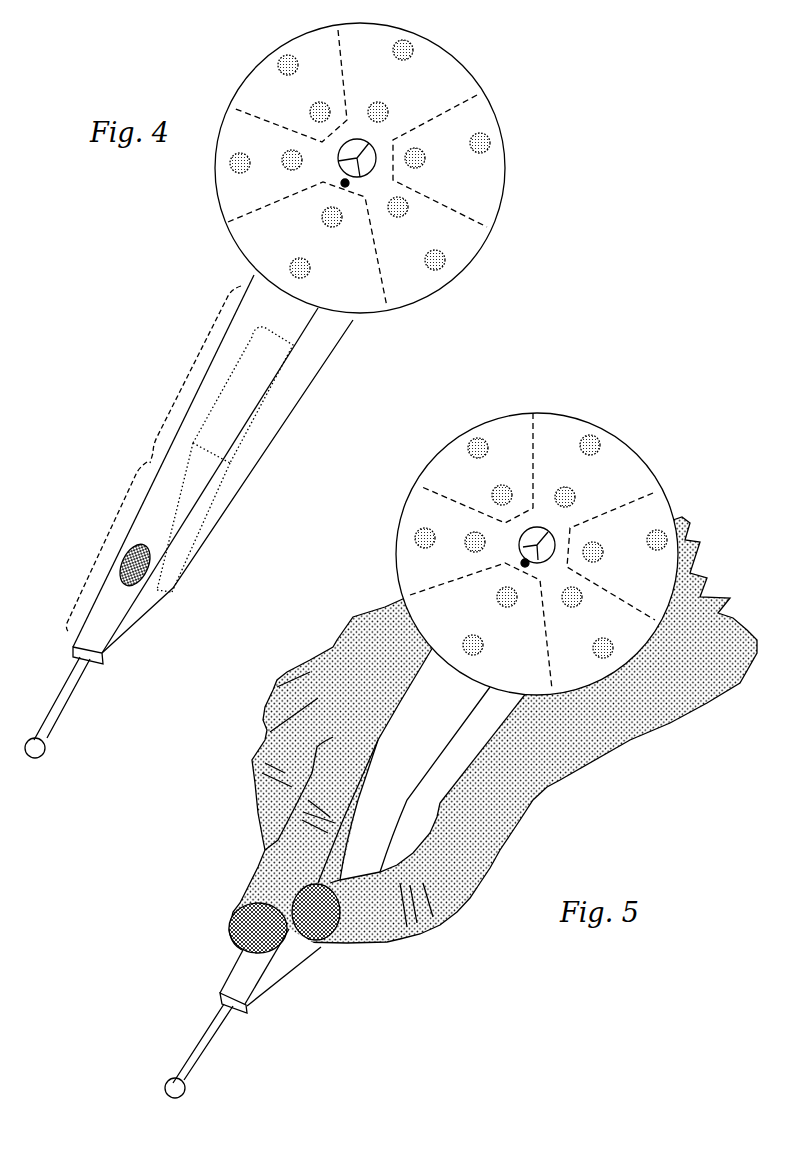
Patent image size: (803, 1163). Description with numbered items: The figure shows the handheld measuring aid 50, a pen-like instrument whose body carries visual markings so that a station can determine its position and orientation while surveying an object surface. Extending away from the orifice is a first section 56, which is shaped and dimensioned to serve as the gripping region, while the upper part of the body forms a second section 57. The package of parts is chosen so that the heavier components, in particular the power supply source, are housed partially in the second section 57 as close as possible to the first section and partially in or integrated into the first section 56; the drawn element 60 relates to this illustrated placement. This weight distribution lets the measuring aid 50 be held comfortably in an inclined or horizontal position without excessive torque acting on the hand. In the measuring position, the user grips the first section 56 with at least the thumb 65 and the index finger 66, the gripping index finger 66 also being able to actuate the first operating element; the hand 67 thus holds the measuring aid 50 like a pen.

In FIG. 4, the handheld measuring aid 50 is at (92, 224).
In FIG. 5, the handheld measuring aid 50 is at (287, 1100).
In FIG. 4, the first section 56 is at (99, 536).
In FIG. 4, the second section 57 is at (187, 368).
In FIG. 4, the tube 60 is at (233, 448).
In FIG. 5, the thumb 65 is at (320, 925).
In FIG. 5, the index finger 66 is at (240, 927).
In FIG. 5, the hand 67 is at (265, 837).